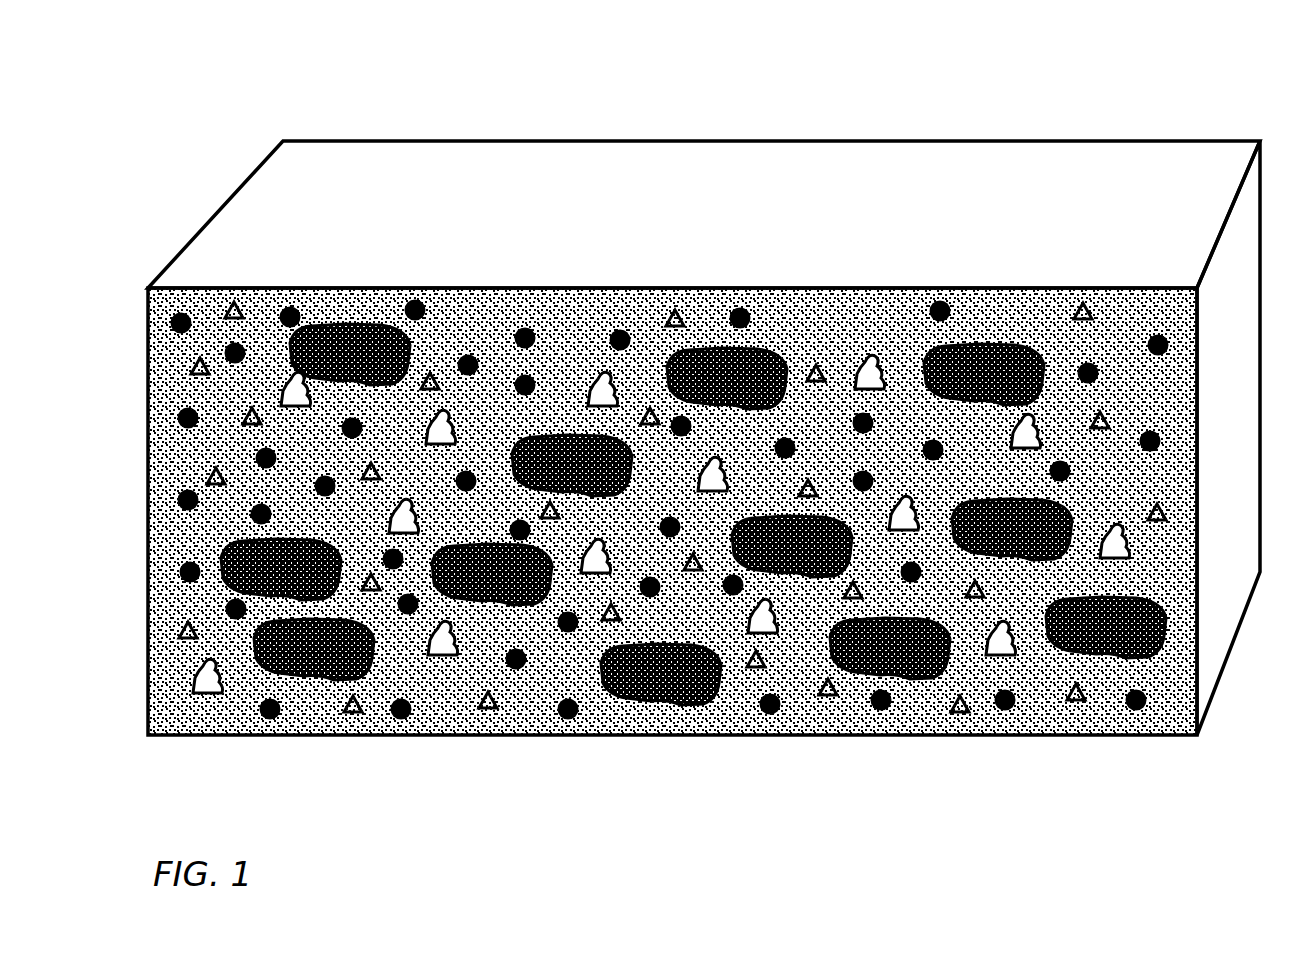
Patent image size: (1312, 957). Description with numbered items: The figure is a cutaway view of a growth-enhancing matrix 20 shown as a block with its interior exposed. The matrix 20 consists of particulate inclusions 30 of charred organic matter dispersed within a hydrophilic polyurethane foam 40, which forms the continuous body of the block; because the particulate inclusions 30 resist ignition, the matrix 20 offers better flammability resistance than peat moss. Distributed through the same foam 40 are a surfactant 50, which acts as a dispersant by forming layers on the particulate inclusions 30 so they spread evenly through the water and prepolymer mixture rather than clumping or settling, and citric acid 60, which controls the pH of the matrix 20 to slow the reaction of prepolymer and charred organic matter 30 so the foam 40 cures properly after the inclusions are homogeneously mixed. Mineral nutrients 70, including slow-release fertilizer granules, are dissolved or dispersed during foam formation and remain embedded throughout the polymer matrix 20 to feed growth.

The matrix 20 is at (1301, 758).
The particulate inclusions 30 is at (418, 346).
The hydrophilic polyurethane foam 40 is at (825, 310).
The surfactant 50 is at (955, 308).
The citric acid 60 is at (1092, 310).
The mineral nutrients 70 is at (446, 425).